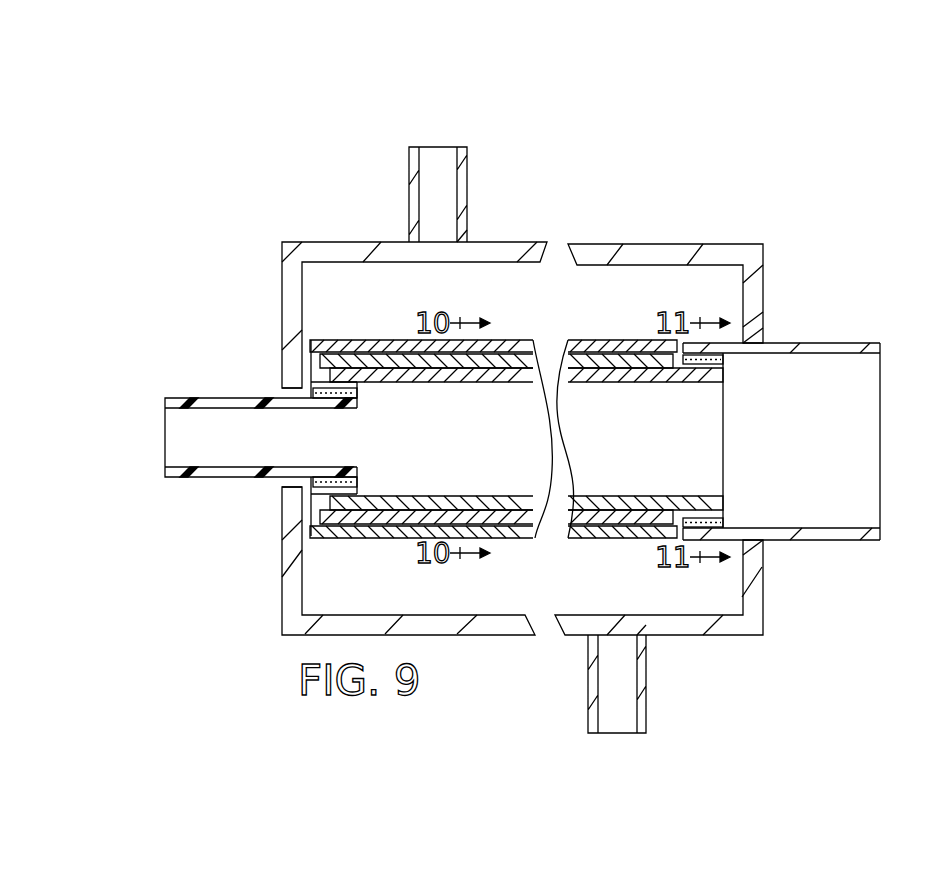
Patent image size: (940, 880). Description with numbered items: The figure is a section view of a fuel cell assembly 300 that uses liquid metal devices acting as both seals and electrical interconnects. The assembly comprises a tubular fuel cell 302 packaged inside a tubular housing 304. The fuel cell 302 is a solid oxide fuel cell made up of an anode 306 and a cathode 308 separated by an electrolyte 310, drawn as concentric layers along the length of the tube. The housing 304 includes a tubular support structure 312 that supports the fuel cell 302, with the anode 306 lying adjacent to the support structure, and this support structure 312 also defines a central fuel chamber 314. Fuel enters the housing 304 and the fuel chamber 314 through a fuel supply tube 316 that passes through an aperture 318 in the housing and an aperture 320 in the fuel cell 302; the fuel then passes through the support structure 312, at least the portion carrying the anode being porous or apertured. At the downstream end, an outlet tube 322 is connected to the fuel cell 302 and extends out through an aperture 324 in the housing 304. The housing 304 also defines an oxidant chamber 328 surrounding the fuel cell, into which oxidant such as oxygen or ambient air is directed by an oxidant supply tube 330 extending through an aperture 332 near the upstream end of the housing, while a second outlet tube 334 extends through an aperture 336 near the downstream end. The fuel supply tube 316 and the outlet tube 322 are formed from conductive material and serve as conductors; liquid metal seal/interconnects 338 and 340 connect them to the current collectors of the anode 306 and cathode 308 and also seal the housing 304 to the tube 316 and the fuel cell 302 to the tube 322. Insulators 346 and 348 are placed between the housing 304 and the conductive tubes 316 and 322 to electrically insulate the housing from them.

The fuel cell assembly 300 is at (330, 198).
The tubular fuel cell 302 is at (523, 540).
The tubular housing 304 is at (682, 243).
The anode 306 is at (585, 345).
The cathode 308 is at (332, 340).
The electrolyte 310 is at (512, 340).
The tubular support structure 312 is at (570, 385).
The fuel chamber 314 is at (658, 480).
The fuel supply tube 316 is at (185, 398).
The aperture 318 is at (285, 500).
The aperture 320 is at (290, 385).
The outlet tube 322 is at (880, 385).
The aperture 324 is at (762, 338).
The oxidant chamber 328 is at (618, 592).
The oxidant supply tube 330 is at (408, 176).
The aperture 332 is at (470, 250).
The outlet tube 334 is at (590, 690).
The aperture 336 is at (650, 622).
The liquid metal seal/interconnect 338 is at (360, 392).
The liquid metal seal/interconnect 340 is at (725, 362).
The insulator 346 is at (283, 392).
The insulator 348 is at (765, 541).